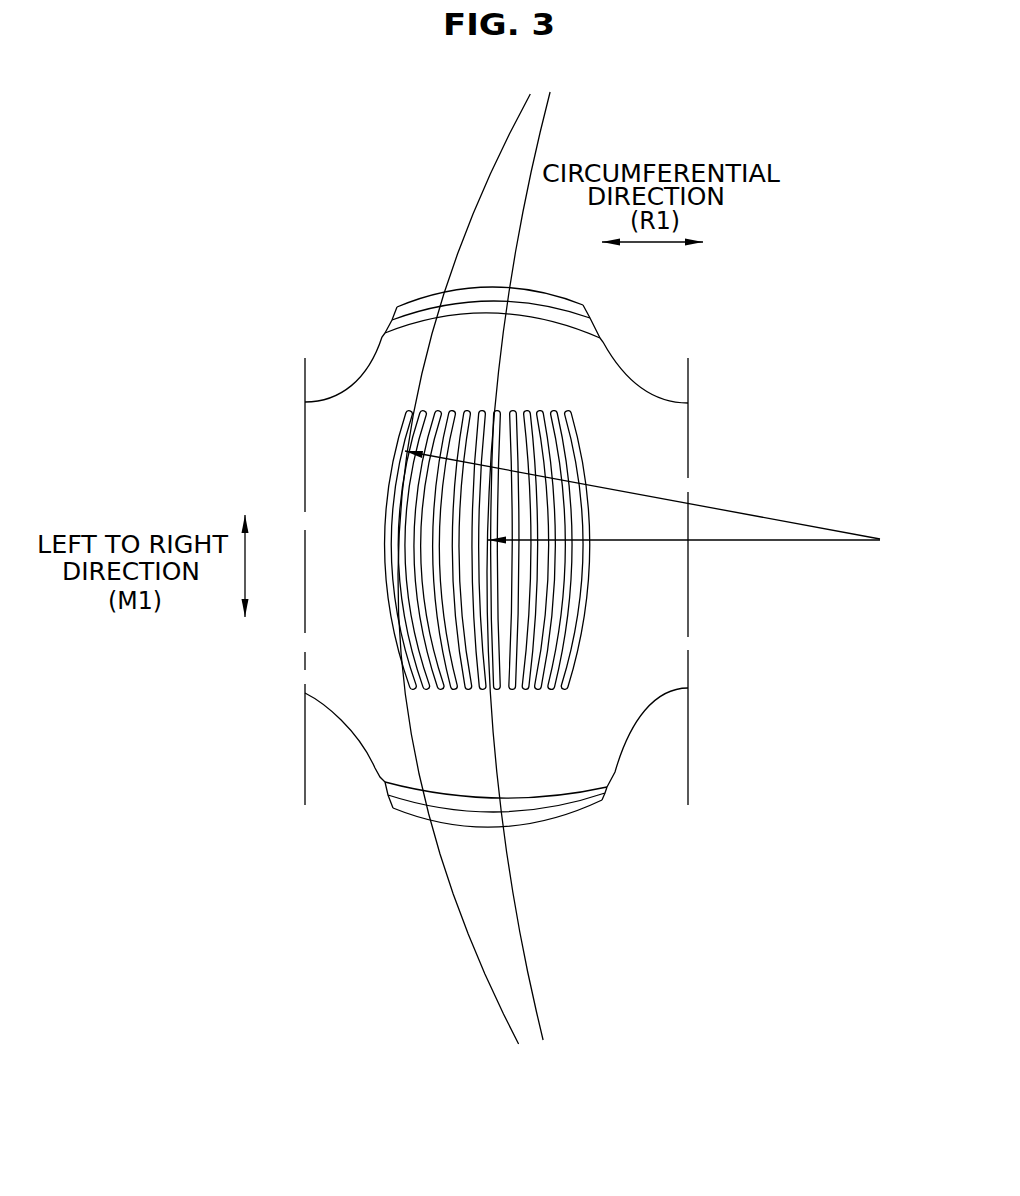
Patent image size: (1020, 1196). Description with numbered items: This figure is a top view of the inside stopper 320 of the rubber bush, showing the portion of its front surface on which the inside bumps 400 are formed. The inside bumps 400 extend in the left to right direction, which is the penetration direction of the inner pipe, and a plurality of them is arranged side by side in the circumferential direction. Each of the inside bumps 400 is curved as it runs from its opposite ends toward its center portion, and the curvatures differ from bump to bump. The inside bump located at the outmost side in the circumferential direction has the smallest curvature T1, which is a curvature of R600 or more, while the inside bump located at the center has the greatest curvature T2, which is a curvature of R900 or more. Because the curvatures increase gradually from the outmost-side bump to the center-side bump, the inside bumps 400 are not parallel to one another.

The inside stopper 320 is at (378, 385).
The inside bumps 400 is at (530, 647).
The curvature of outmost-side inside bump T1 is at (471, 217).
The curvature of center-side inside bump T2 is at (527, 970).
The radius of curvature R600 is at (785, 539).
The radius of curvature R900 is at (785, 540).